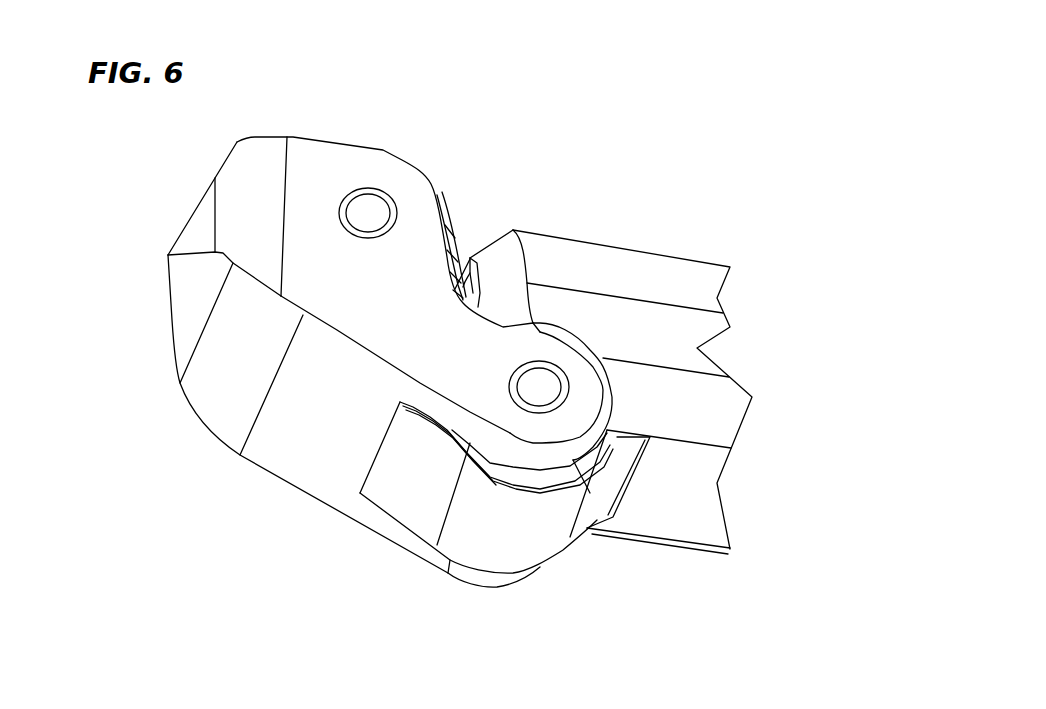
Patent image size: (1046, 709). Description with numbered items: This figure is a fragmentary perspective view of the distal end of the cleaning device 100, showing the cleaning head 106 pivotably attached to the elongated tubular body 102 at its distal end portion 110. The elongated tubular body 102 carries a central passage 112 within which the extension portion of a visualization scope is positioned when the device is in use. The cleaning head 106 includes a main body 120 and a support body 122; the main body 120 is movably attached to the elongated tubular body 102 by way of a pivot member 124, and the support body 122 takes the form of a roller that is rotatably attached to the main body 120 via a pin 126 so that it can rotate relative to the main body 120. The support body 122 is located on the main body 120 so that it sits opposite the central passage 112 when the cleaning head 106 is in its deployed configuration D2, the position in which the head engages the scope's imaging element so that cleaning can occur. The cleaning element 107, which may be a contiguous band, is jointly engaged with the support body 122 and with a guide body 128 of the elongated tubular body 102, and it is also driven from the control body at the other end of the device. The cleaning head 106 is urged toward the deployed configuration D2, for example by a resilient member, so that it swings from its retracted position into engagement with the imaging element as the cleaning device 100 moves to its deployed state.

The cleaning device 100 is at (680, 152).
The elongated tubular body 102 is at (700, 268).
The cleaning head 106 is at (326, 443).
The cleaning element 107 is at (408, 475).
The distal end portion 110 is at (540, 250).
The central passage 112 is at (470, 257).
The main body 120 is at (311, 201).
The support body 122 is at (431, 186).
The pivot member 124 is at (540, 397).
The pin 126 is at (366, 206).
The guide body 128 is at (573, 463).
The deployed configuration D2 is at (125, 401).